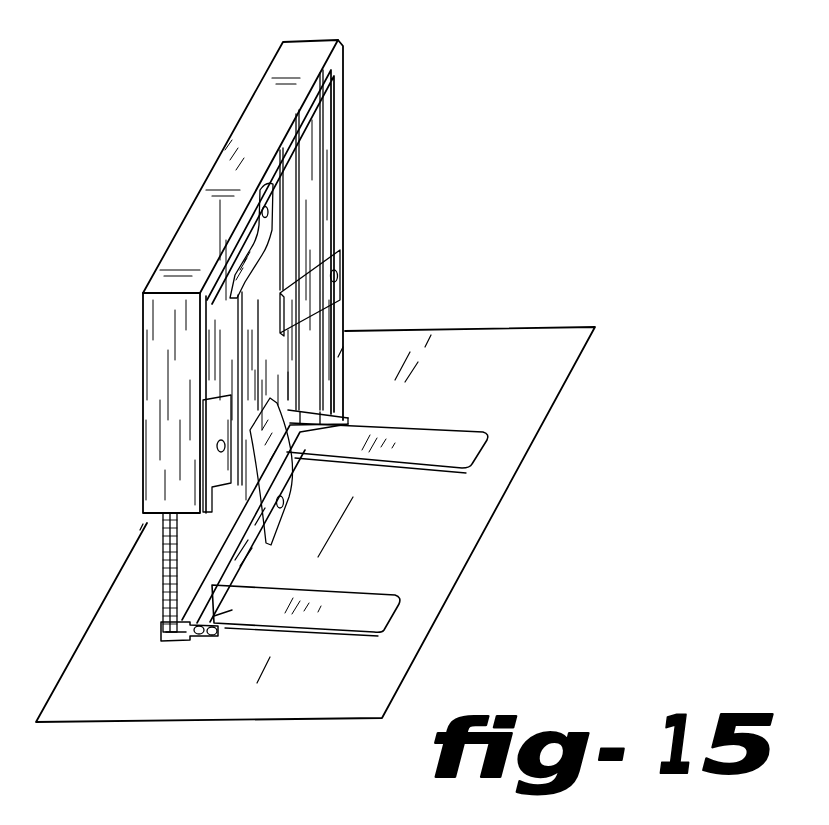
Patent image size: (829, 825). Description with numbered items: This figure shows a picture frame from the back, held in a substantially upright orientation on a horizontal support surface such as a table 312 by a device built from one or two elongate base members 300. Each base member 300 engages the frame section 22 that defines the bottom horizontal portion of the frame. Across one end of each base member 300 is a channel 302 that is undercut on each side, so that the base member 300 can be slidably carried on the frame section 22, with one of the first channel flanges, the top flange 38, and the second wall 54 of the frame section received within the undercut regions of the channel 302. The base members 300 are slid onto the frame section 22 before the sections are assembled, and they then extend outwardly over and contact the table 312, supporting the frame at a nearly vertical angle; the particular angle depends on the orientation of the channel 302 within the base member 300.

The frame section 22 is at (188, 644).
The second or top flange 38 is at (201, 642).
The second wall 54 is at (219, 635).
The elongate base member 300 is at (418, 428).
The channel 302 is at (216, 615).
The table 312 is at (303, 702).